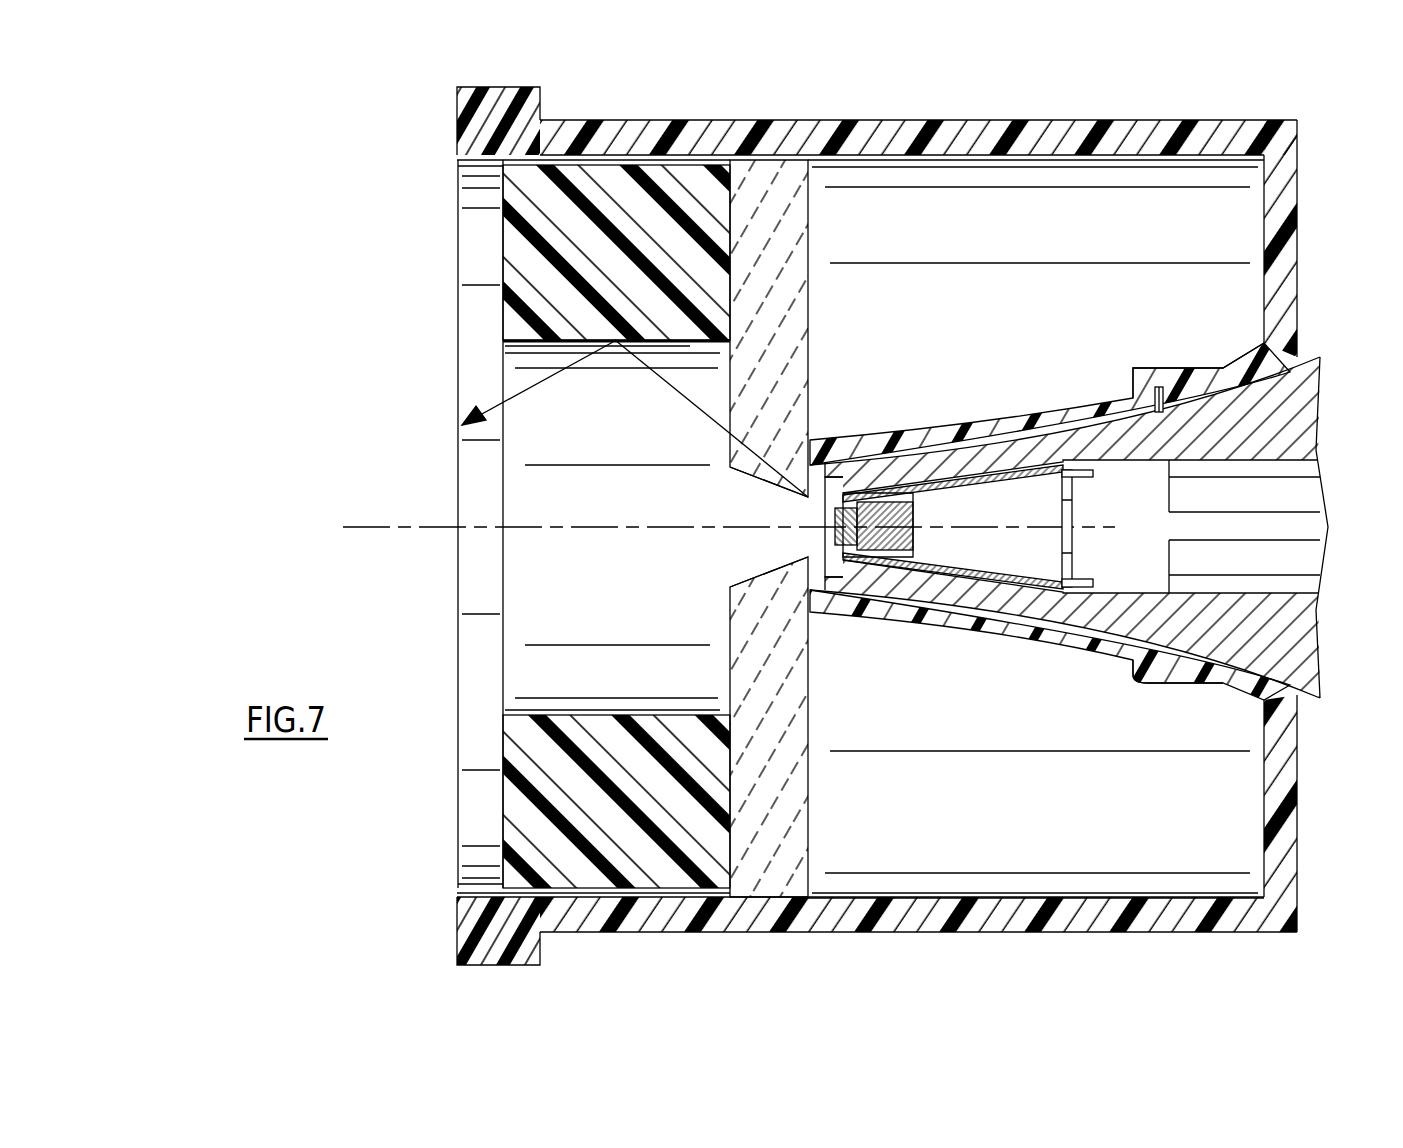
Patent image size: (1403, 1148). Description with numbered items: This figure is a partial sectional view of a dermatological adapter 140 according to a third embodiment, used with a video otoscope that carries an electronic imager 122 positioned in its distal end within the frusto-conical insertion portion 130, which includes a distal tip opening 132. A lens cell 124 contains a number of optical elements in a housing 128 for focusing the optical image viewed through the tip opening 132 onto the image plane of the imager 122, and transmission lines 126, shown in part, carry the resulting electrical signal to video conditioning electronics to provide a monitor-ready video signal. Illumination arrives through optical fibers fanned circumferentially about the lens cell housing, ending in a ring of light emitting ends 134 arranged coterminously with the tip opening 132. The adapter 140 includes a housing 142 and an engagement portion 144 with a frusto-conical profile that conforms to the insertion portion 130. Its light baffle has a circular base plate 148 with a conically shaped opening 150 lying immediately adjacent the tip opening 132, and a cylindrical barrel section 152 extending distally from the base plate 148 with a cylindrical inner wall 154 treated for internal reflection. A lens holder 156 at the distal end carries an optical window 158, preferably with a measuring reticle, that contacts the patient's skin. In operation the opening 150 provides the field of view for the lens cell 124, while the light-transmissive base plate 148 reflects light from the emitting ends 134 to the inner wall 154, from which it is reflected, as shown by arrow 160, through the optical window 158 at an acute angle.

The electronic imager 122 is at (1143, 575).
The lens cell 124 is at (907, 456).
The transmission lines 126 is at (1310, 532).
The housing 128 is at (1013, 457).
The frusto-conical insertion portion 130 is at (1060, 450).
The distal tip opening 132 is at (808, 402).
The light emitting ends 134 is at (850, 615).
The dermatological adapter 140 is at (1058, 920).
The housing 142 is at (1268, 920).
The engagement portion 144 is at (1090, 648).
The circular base plate 148 is at (770, 190).
The conically shaped opening 150 is at (762, 487).
The cylindrical barrel section 152 is at (606, 190).
The cylindrical inner wall 154 is at (680, 343).
The lens holder 156 is at (470, 127).
The optical window 158 is at (478, 218).
The arrow 160 is at (472, 418).